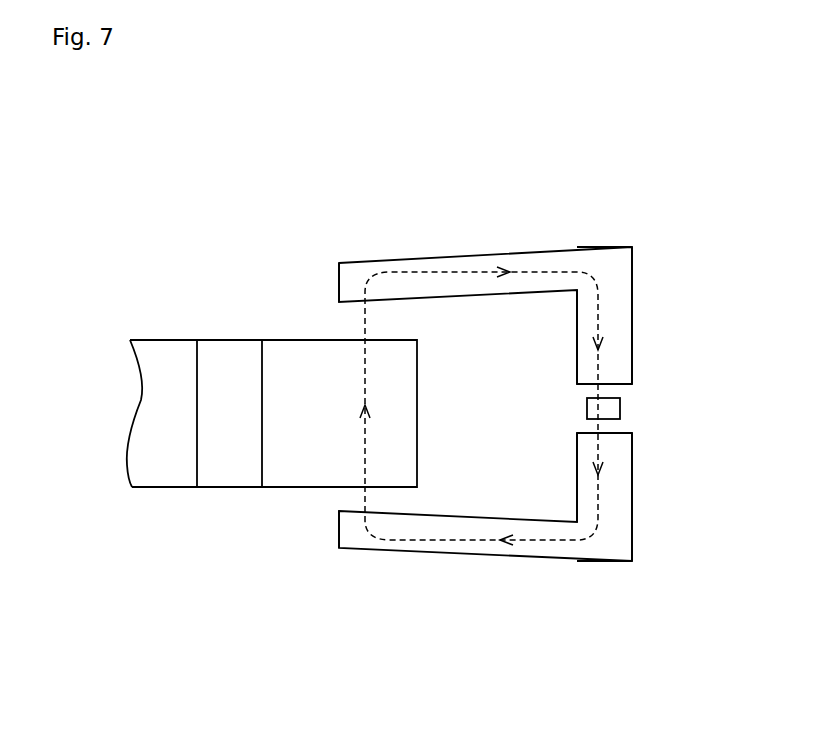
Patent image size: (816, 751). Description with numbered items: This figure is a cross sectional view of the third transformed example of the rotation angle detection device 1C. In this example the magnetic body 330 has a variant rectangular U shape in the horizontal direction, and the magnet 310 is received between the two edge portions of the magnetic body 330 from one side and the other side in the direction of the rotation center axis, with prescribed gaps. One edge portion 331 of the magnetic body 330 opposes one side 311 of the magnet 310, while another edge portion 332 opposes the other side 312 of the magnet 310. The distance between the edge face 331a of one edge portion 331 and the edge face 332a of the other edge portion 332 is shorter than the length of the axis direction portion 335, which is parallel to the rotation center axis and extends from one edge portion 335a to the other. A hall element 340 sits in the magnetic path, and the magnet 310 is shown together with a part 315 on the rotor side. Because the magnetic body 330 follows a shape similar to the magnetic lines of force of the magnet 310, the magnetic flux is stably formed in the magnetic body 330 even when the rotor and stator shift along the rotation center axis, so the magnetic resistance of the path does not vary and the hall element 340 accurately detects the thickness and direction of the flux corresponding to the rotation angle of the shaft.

The rotation angle detection device 1C is at (492, 144).
The magnet 310 is at (366, 446).
The one side of the magnet 311 is at (400, 340).
The another side of the magnet 312 is at (400, 487).
The magnet holder / shaft 315 is at (211, 487).
The magnetic body 330 is at (563, 248).
The one edge portion of the magnetic body 331 is at (338, 274).
The edge face of one edge portion 331a is at (350, 263).
The another edge portion of the magnetic body 332 is at (339, 531).
The edge face of another edge portion 332a is at (350, 549).
The axis direction portion 335 is at (633, 320).
The one edge portion of the axis direction portion 335a is at (632, 247).
The hall element 340 is at (621, 405).